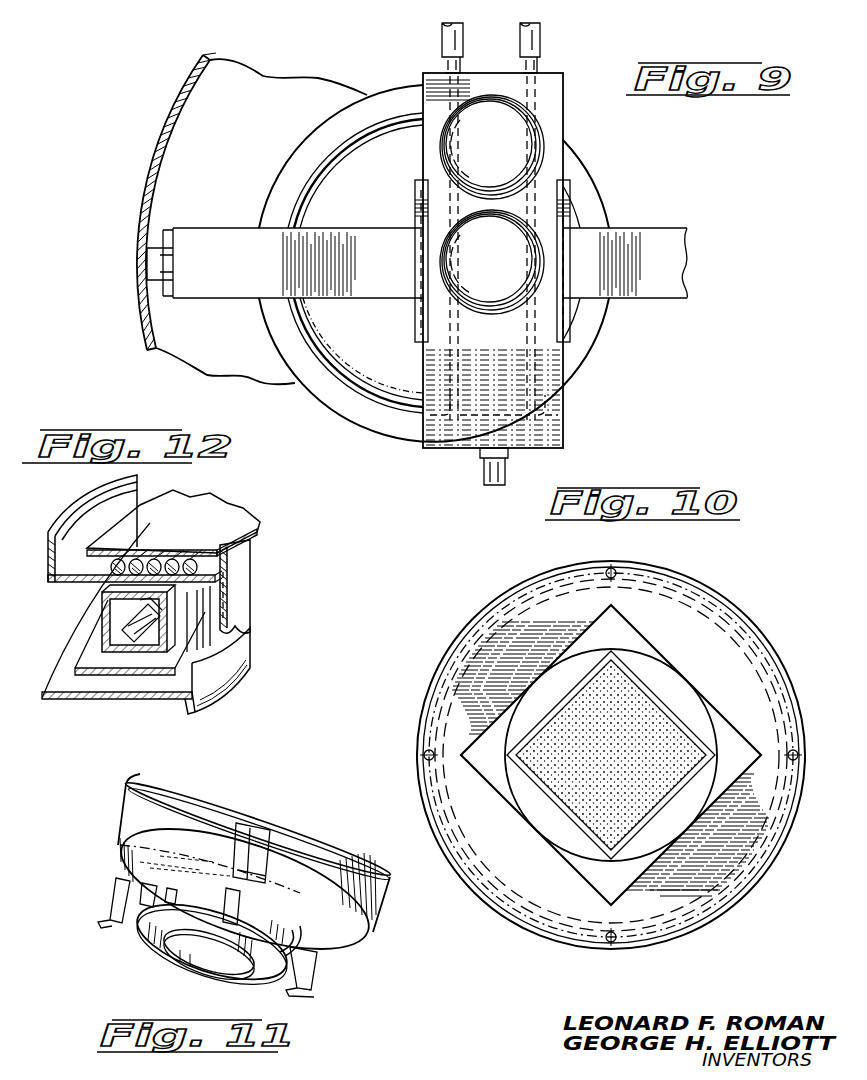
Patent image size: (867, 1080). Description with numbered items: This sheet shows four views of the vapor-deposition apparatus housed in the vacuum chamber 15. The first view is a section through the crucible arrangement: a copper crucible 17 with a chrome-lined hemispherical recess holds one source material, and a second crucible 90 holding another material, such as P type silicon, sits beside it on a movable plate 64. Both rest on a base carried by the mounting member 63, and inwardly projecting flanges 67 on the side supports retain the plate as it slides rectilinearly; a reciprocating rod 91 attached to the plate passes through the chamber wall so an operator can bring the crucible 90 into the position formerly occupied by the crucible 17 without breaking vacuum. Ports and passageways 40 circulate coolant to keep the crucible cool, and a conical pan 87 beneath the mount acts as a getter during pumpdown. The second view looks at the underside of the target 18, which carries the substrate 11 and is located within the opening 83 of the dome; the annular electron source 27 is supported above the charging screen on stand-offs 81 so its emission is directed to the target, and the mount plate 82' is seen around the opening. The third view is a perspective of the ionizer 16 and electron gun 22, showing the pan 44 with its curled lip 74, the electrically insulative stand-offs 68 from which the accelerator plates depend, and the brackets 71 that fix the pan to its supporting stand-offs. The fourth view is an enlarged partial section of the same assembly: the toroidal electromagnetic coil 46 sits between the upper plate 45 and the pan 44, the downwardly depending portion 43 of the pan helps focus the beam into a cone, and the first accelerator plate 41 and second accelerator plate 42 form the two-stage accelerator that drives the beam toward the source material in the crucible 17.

In FIG. 10, the substrate 11 is at (668, 725).
In FIG. 10, the vacuum chamber 15 is at (720, 598).
In FIG. 12, the ionizer 16 is at (70, 498).
In FIG. 11, the ionizer 16 is at (276, 806).
In FIG. 9, the crucible 17 is at (508, 308).
In FIG. 10, the target 18 is at (658, 695).
In FIG. 12, the electron gun 22 is at (108, 712).
In FIG. 11, the electron gun 22 is at (150, 965).
In FIG. 10, the electron source 27 is at (772, 660).
In FIG. 9, the ports and passageways 40 is at (530, 100).
In FIG. 12, the first accelerator plate 41 is at (92, 657).
In FIG. 12, the second accelerator plate 42 is at (52, 686).
In FIG. 11, the second accelerator plate 42 is at (270, 972).
In FIG. 12, the downwardly depending portion 43 is at (242, 572).
In FIG. 12, the pan 44 is at (88, 565).
In FIG. 11, the pan 44 is at (333, 940).
In FIG. 12, the plate 45 is at (222, 523).
In FIG. 12, the toroidal electromagnetic coil 46 is at (140, 558).
In FIG. 9, the mounting member 63 is at (676, 246).
In FIG. 9, the movable plate 64 is at (555, 412).
In FIG. 9, the inwardly projecting flanges 67 is at (562, 175).
In FIG. 11, the electrically insulative stand-offs 68 is at (146, 897).
In FIG. 11, the brackets 71 is at (104, 920).
In FIG. 11, the curled lip 74 is at (124, 787).
In FIG. 10, the stand-offs 81 is at (616, 572).
In FIG. 10, the square plate 82' is at (610, 724).
In FIG. 10, the opening 83 is at (654, 668).
In FIG. 9, the conical pan 87 is at (608, 200).
In FIG. 9, the crucible 90 is at (545, 146).
In FIG. 9, the reciprocating rod 91 is at (508, 470).